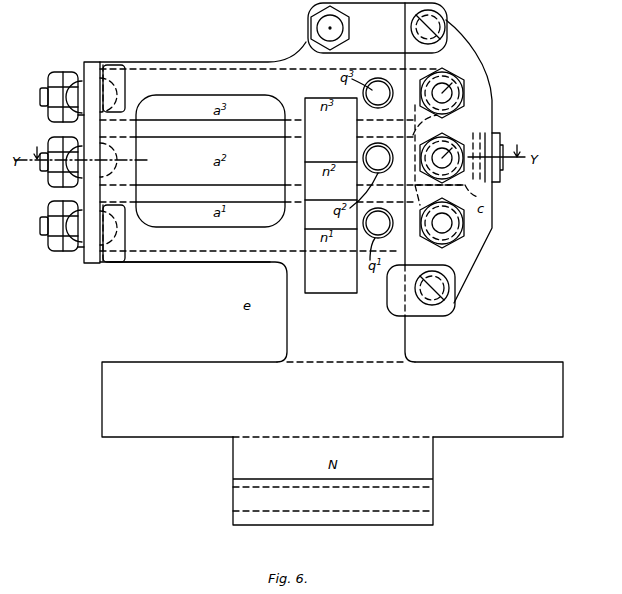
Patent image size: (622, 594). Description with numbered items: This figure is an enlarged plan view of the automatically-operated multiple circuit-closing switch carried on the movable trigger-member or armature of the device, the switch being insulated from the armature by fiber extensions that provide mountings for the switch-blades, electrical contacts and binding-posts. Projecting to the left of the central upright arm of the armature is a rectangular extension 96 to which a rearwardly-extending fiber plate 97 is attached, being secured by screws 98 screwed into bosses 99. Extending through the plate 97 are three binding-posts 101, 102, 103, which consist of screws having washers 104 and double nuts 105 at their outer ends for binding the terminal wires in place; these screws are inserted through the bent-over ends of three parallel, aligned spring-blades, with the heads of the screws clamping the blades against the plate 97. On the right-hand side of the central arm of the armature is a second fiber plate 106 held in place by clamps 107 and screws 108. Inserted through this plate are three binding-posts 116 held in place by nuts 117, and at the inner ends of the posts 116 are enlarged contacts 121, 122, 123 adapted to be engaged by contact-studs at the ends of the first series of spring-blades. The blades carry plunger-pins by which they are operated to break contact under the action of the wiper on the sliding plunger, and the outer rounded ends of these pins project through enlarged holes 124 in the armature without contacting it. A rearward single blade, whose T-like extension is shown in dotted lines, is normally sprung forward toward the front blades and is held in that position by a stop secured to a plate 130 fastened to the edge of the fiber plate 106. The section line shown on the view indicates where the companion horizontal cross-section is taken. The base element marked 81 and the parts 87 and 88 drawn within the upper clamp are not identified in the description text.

The base block 81 is at (332, 399).
The hexagonal nut 87 is at (315, 20).
The bolt end 88 is at (318, 28).
The rectangular extension 96 is at (205, 262).
The fiber plate 97 is at (96, 65).
The screws 98 is at (78, 78).
The bosses 99 is at (117, 82).
The binding-post 101 is at (44, 228).
The binding-post 102 is at (48, 165).
The binding-post 103 is at (44, 100).
The washers 104 is at (80, 117).
The double nuts 105 is at (60, 73).
The fiber plate 106 is at (462, 260).
The clamps 107 is at (428, 328).
The screws 108 is at (446, 28).
The binding-posts 116 is at (462, 88).
The nuts 117 is at (460, 78).
The contact 121 is at (470, 244).
The contact 122 is at (470, 188).
The contact 123 is at (448, 95).
The enlarged holes 124 is at (380, 88).
The plate 130 is at (500, 140).